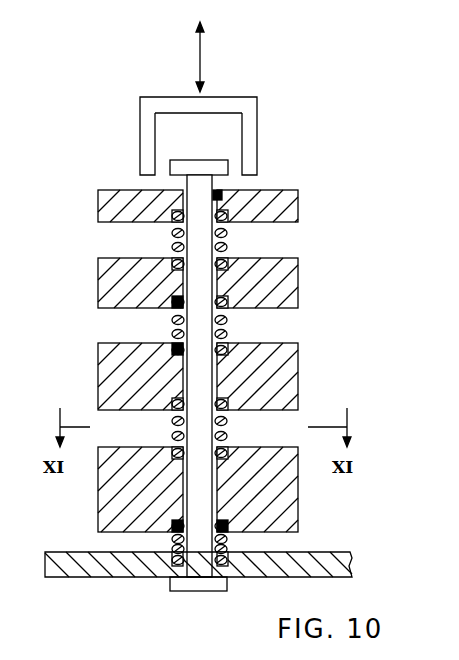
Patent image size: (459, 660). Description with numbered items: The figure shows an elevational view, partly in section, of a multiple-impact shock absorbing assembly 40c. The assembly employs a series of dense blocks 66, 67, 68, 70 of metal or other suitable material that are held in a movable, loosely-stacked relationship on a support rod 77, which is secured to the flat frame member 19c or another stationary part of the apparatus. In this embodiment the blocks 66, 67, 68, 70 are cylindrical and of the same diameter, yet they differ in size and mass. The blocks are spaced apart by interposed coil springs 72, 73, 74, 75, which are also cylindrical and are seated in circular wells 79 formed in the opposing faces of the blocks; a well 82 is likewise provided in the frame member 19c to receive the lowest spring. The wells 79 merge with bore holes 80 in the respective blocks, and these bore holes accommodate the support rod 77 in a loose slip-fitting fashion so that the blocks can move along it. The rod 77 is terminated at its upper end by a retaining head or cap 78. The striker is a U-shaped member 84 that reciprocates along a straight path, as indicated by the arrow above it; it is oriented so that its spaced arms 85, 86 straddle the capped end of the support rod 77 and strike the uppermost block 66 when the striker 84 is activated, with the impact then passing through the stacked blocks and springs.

The frame 19c is at (137, 573).
The shock absorbing assembly 40c is at (381, 186).
The block 66 is at (292, 213).
The block 67 is at (292, 290).
The block 68 is at (265, 362).
The block 70 is at (287, 502).
The coil spring 72 is at (180, 247).
The coil spring 73 is at (175, 333).
The coil spring 74 is at (173, 421).
The coil spring 75 is at (172, 550).
The support rod 77 is at (205, 278).
The retaining head or cap 78 is at (187, 165).
The circular wells 79 is at (227, 258).
The bore holes 80 is at (217, 192).
The well 82 is at (230, 575).
The U-shaped member 84 is at (247, 102).
The arm 85 is at (252, 119).
The arm 86 is at (147, 128).